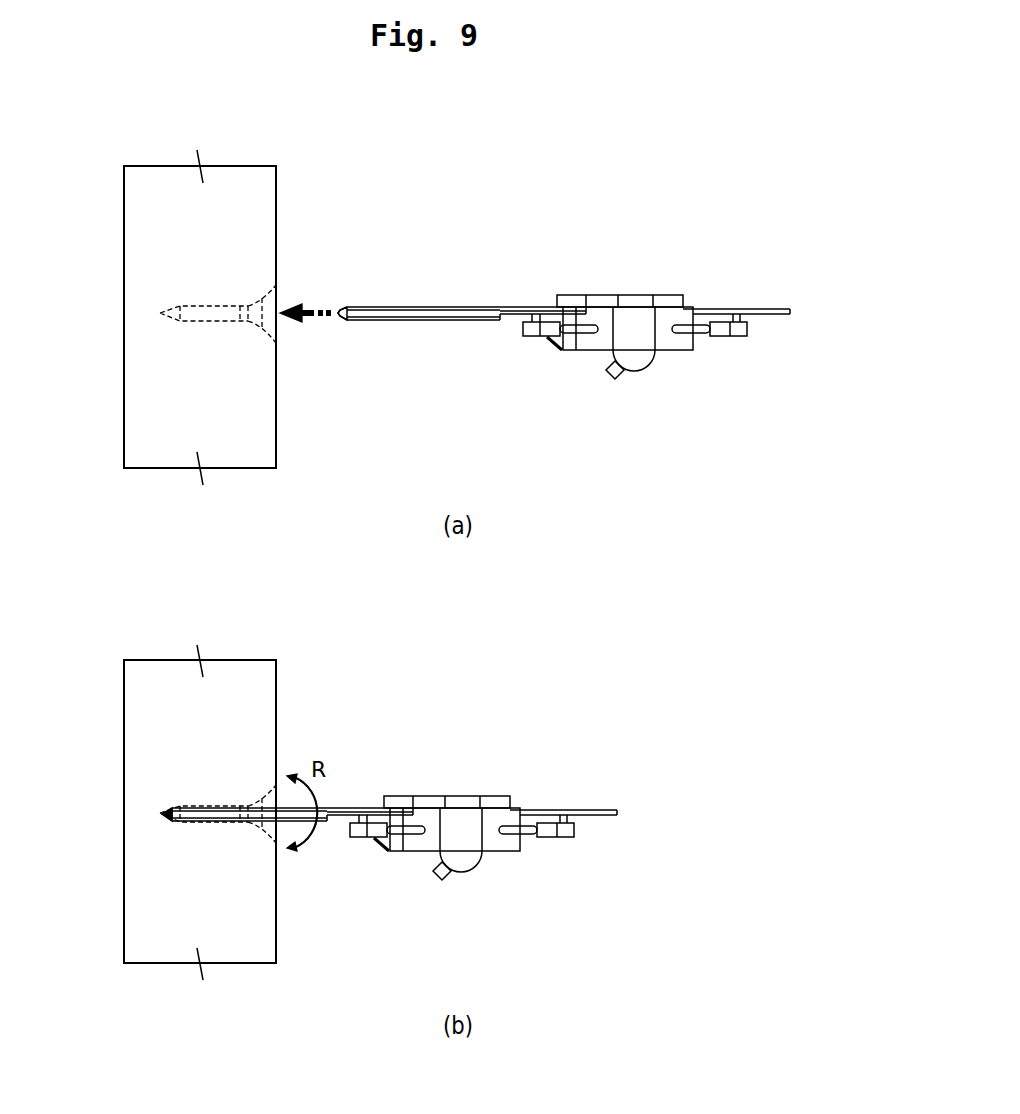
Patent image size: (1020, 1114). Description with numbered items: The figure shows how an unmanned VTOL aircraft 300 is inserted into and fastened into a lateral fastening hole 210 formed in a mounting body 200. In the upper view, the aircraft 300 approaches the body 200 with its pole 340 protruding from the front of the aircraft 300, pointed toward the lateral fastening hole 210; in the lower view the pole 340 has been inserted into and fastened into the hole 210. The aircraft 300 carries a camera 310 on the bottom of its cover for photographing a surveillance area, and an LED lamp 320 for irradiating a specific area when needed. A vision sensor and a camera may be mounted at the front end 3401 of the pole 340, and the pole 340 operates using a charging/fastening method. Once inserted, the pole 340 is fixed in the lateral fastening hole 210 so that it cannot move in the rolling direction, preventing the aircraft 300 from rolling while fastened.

The mounting wall 200 is at (251, 206).
The lateral fastening hole 210 is at (205, 313).
The unmanned VTOL aircraft 300 is at (642, 271).
The camera 310 is at (610, 375).
The LED lamp 320 is at (552, 338).
The pole 340 is at (430, 306).
The front end 3401 is at (345, 320).